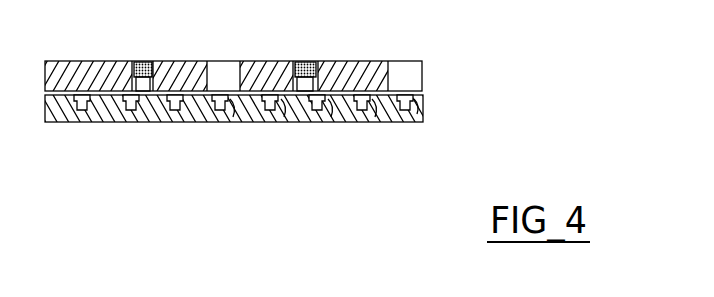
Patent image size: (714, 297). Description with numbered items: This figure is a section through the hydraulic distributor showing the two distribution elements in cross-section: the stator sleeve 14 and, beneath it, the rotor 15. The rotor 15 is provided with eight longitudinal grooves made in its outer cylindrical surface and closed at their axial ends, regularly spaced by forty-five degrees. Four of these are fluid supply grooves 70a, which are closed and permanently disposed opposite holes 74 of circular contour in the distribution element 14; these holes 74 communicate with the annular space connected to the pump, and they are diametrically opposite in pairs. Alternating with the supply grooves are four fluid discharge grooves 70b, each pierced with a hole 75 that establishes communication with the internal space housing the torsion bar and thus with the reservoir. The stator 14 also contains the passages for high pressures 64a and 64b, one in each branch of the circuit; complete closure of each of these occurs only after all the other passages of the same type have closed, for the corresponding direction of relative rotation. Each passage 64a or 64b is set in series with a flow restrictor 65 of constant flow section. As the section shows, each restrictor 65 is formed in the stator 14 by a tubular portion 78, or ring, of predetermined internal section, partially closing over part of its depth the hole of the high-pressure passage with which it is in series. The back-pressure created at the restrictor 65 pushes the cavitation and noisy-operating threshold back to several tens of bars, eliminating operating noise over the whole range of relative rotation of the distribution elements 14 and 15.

The distribution element 14 is at (380, 61).
The distribution element 15 is at (101, 113).
The flow restrictor 65 is at (142, 61).
The tubular portion 78 is at (154, 61).
The hole 74 is at (227, 61).
The passage for high pressures 64a is at (314, 102).
The passage for high pressures 64b is at (131, 104).
The hole 75 is at (177, 110).
The fluid supply groove 70a is at (331, 112).
The fluid discharge groove 70b is at (287, 108).